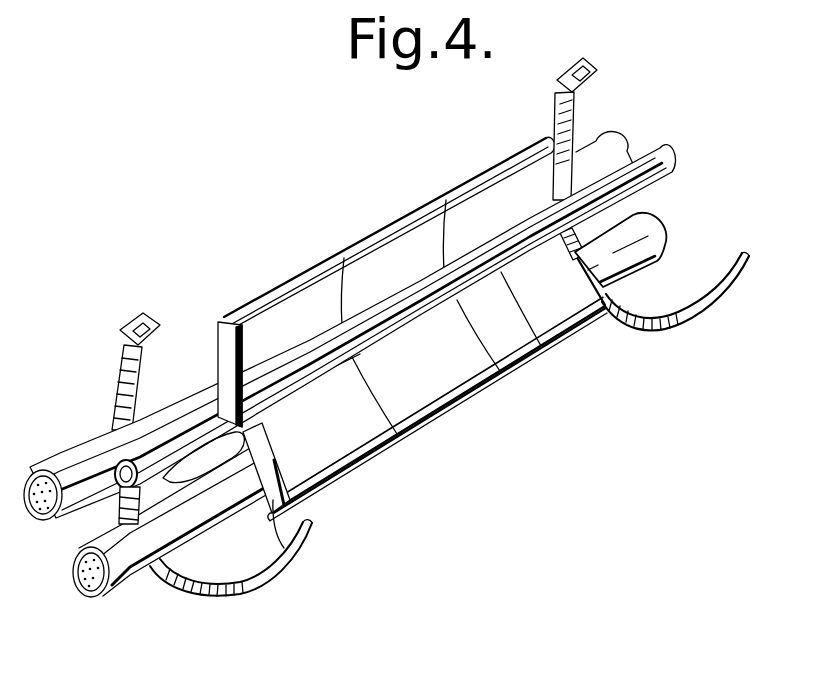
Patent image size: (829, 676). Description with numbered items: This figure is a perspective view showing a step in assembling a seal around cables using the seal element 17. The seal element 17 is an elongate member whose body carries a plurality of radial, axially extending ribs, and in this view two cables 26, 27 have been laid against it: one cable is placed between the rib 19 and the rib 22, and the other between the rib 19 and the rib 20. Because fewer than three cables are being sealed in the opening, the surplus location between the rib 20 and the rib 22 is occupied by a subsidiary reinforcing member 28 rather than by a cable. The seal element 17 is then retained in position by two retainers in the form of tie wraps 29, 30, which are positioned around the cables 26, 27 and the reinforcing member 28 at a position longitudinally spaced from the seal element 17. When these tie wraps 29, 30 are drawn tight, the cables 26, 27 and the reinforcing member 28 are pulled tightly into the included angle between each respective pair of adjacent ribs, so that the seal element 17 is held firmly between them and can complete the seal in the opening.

The seal element 17 is at (397, 220).
The rib 19 is at (258, 443).
The rib 20 is at (284, 548).
The rib 22 is at (218, 320).
The cable 26 is at (66, 455).
The cable 27 is at (138, 577).
The subsidiary reinforcing member 28 is at (535, 342).
The tie wrap 29 is at (223, 596).
The tie wrap 30 is at (747, 287).